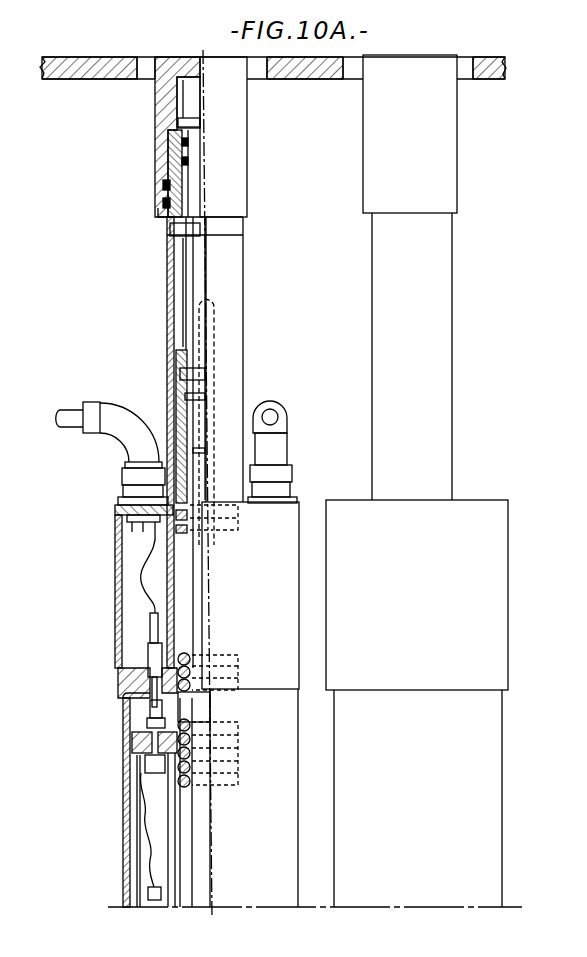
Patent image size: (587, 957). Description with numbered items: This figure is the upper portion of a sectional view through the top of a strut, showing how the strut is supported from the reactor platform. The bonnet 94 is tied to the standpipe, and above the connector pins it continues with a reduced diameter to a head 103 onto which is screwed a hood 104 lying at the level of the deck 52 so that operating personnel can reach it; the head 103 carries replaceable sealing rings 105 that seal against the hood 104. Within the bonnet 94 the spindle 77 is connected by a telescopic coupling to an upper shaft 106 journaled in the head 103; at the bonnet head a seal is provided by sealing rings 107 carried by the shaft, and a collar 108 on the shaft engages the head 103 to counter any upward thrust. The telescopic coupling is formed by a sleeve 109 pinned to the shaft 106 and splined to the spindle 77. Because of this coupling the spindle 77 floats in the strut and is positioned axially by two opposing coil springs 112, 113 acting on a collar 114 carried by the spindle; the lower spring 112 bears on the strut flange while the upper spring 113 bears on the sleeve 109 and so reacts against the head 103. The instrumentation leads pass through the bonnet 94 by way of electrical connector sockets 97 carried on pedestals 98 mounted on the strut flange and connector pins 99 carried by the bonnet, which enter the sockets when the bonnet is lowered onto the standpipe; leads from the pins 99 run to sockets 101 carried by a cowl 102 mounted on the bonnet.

The deck 52 is at (117, 80).
The hood 104 is at (157, 132).
The sealing rings 105 is at (162, 184).
The head 103 is at (160, 212).
The sealing rings 107 is at (189, 144).
The collar 108 is at (195, 232).
The upper shaft 106 is at (185, 270).
The sleeve 109 is at (172, 410).
The sockets 101 is at (125, 520).
The cowl 102 is at (117, 558).
The spindle 77 is at (200, 595).
The upper coil spring 113 is at (186, 657).
The connector pins 99 is at (150, 717).
The electrical connector sockets 97 is at (148, 726).
The collar 114 is at (195, 706).
The pedestals 98 is at (128, 785).
The lower coil spring 112 is at (190, 782).
The bonnet 94 is at (128, 850).